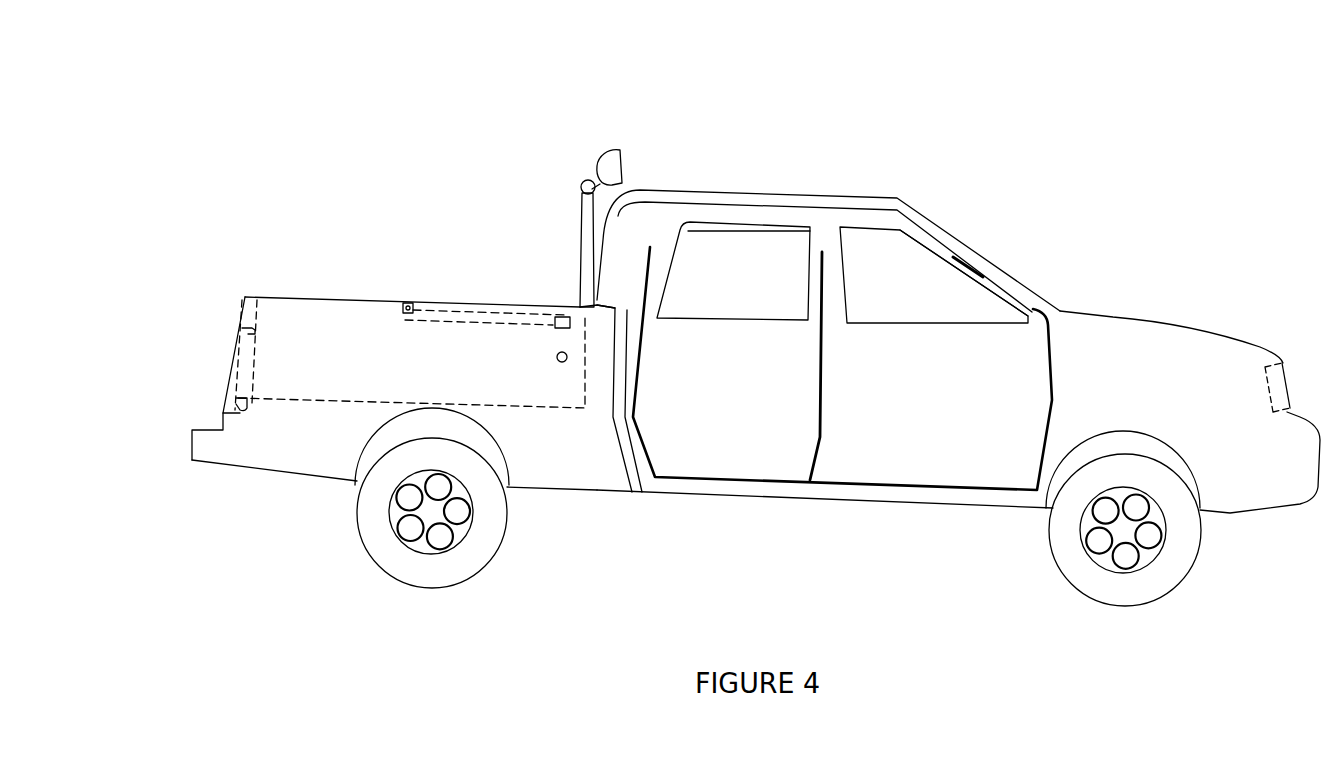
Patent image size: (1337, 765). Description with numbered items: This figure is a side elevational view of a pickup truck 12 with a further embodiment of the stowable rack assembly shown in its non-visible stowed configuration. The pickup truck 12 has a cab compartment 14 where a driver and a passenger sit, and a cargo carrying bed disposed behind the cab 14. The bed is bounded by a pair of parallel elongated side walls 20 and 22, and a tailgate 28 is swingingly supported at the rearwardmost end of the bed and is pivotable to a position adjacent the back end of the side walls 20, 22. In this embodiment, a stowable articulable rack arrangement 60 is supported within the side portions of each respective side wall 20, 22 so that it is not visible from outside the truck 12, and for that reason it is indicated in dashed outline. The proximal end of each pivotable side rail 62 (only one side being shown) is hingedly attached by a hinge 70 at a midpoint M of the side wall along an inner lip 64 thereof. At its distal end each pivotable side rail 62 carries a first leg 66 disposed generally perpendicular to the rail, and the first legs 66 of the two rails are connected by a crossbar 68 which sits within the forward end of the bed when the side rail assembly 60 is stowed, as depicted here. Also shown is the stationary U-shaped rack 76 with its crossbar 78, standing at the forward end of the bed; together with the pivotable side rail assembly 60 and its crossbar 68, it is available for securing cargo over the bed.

The pickup truck 12 is at (1117, 317).
The cab compartment 14 is at (763, 195).
The side wall 20 is at (287, 380).
The side wall 22 is at (283, 297).
The tailgate 28 is at (241, 361).
The stowable articulable rack arrangement 60 is at (518, 310).
The pivotable side rail 62 is at (483, 318).
The inner lip 64 is at (377, 306).
The first leg 66 is at (570, 330).
The crossbar 68 is at (557, 370).
The hinge 70 is at (397, 324).
The stationary U-shaped rack 76 is at (578, 238).
The crossbar 78 is at (580, 165).
The midpoint M is at (398, 297).